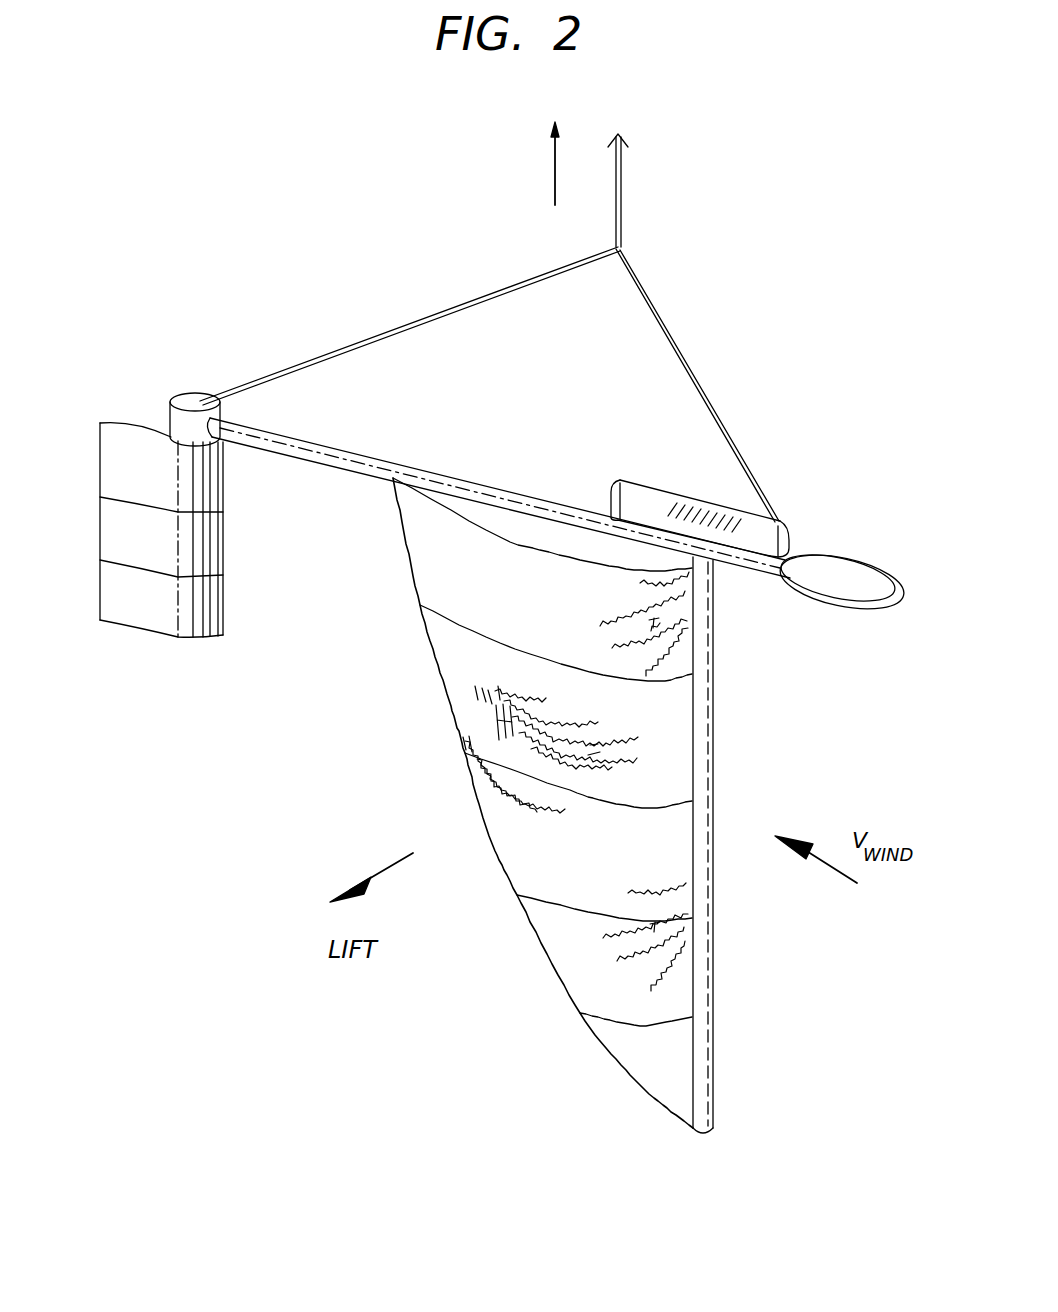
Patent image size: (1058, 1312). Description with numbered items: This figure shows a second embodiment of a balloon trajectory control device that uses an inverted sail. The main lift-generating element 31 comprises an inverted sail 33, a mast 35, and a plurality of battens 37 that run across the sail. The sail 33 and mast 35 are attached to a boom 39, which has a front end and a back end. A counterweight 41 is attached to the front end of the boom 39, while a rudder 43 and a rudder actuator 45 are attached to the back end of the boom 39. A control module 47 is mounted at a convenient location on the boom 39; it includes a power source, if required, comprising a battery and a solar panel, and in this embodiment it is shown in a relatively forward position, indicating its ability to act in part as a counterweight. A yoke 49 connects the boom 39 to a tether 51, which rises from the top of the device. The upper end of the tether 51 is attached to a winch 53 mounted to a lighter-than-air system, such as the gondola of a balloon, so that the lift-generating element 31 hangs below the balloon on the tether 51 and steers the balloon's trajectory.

The main lift-generating element 31 is at (758, 956).
The inverted sail 33 is at (462, 678).
The mast 35 is at (700, 700).
The battens 37 is at (558, 910).
The boom 39 is at (329, 443).
The counterweight 41 is at (848, 575).
The rudder 43 is at (117, 542).
The rudder actuator 45 is at (194, 398).
The control module 47 is at (650, 490).
The yoke 49 is at (392, 330).
The tether 51 is at (622, 200).
The winch 53 is at (553, 176).